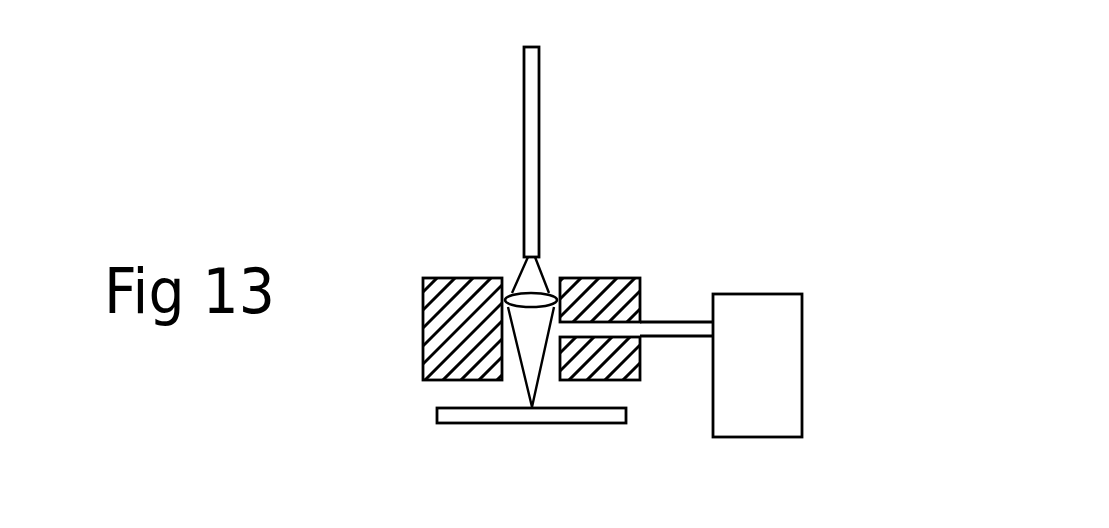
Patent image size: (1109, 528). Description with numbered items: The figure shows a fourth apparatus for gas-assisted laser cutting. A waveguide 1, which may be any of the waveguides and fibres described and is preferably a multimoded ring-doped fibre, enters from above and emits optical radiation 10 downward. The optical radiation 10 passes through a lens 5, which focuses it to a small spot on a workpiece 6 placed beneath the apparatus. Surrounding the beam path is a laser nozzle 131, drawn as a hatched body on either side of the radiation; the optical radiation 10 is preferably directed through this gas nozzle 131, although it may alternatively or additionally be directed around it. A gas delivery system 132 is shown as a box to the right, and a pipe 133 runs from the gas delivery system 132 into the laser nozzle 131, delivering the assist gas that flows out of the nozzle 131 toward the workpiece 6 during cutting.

The waveguide 1 is at (524, 119).
The optical radiation 10 is at (523, 270).
The lens 5 is at (543, 290).
The laser nozzle 131 is at (437, 277).
The pipe 133 is at (655, 320).
The gas delivery system 132 is at (802, 336).
The substrate 6 is at (436, 416).